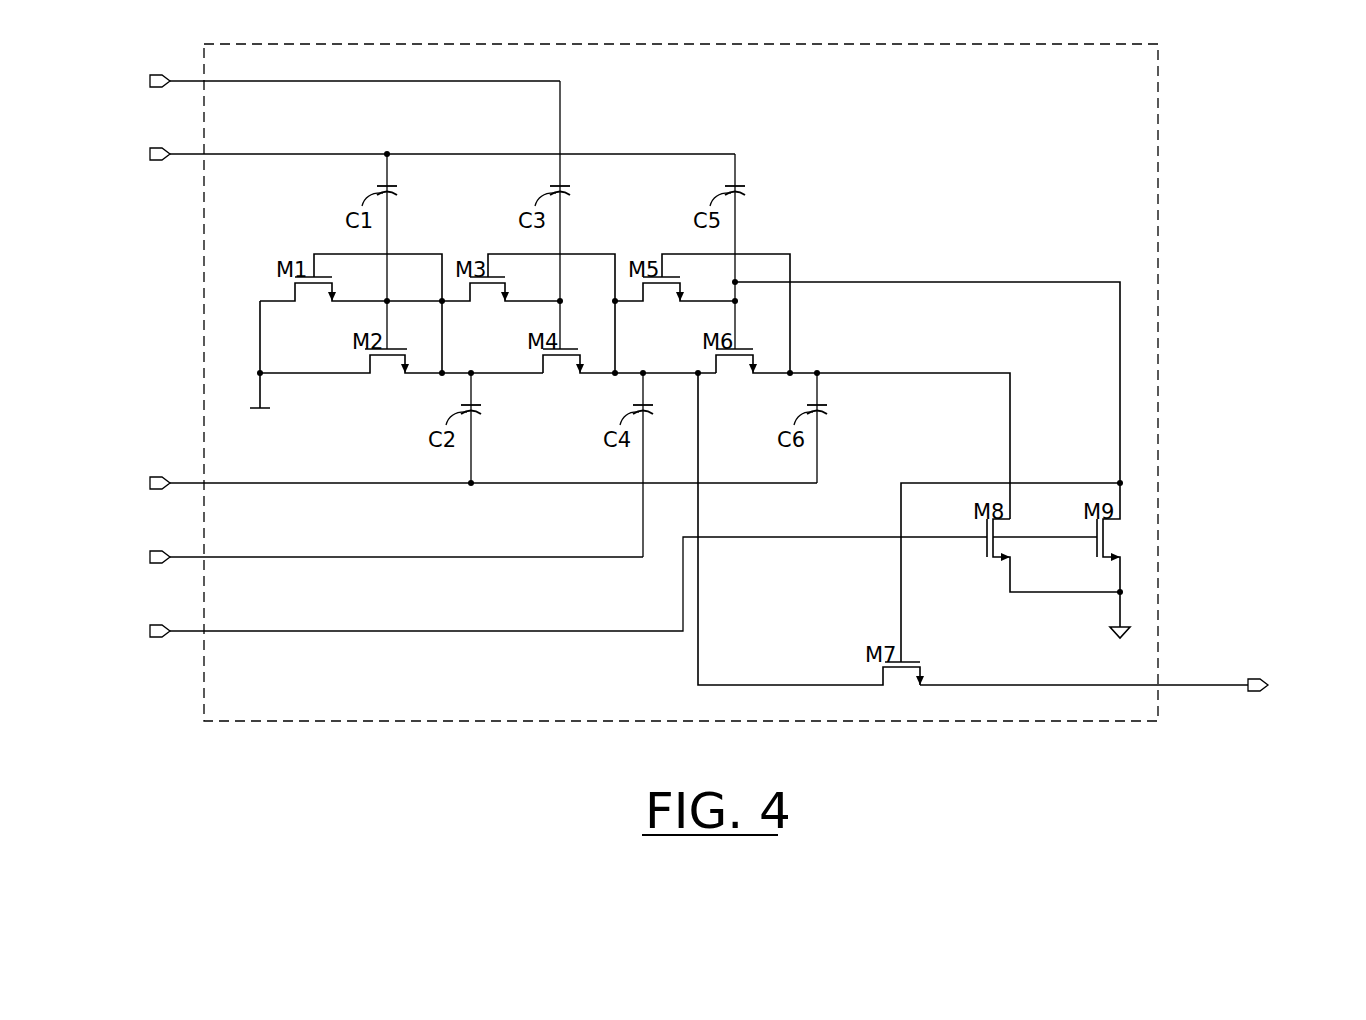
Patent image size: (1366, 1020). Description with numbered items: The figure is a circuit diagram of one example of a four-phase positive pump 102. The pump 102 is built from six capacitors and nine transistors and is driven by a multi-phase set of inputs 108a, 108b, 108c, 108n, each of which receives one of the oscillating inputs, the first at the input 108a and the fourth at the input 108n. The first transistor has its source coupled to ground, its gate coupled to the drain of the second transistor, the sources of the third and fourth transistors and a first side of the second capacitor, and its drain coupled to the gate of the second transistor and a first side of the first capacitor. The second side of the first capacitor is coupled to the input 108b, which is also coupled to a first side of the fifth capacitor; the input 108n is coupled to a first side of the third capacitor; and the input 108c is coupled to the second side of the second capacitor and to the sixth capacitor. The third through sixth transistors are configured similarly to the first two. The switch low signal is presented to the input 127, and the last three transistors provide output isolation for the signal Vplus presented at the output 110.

The positive pump 102 is at (275, 44).
The input 108n is at (204, 81).
The input 108c is at (204, 154).
The input 108b is at (204, 483).
The input 108a is at (204, 557).
The input 127 is at (204, 631).
The output 110 is at (1158, 685).